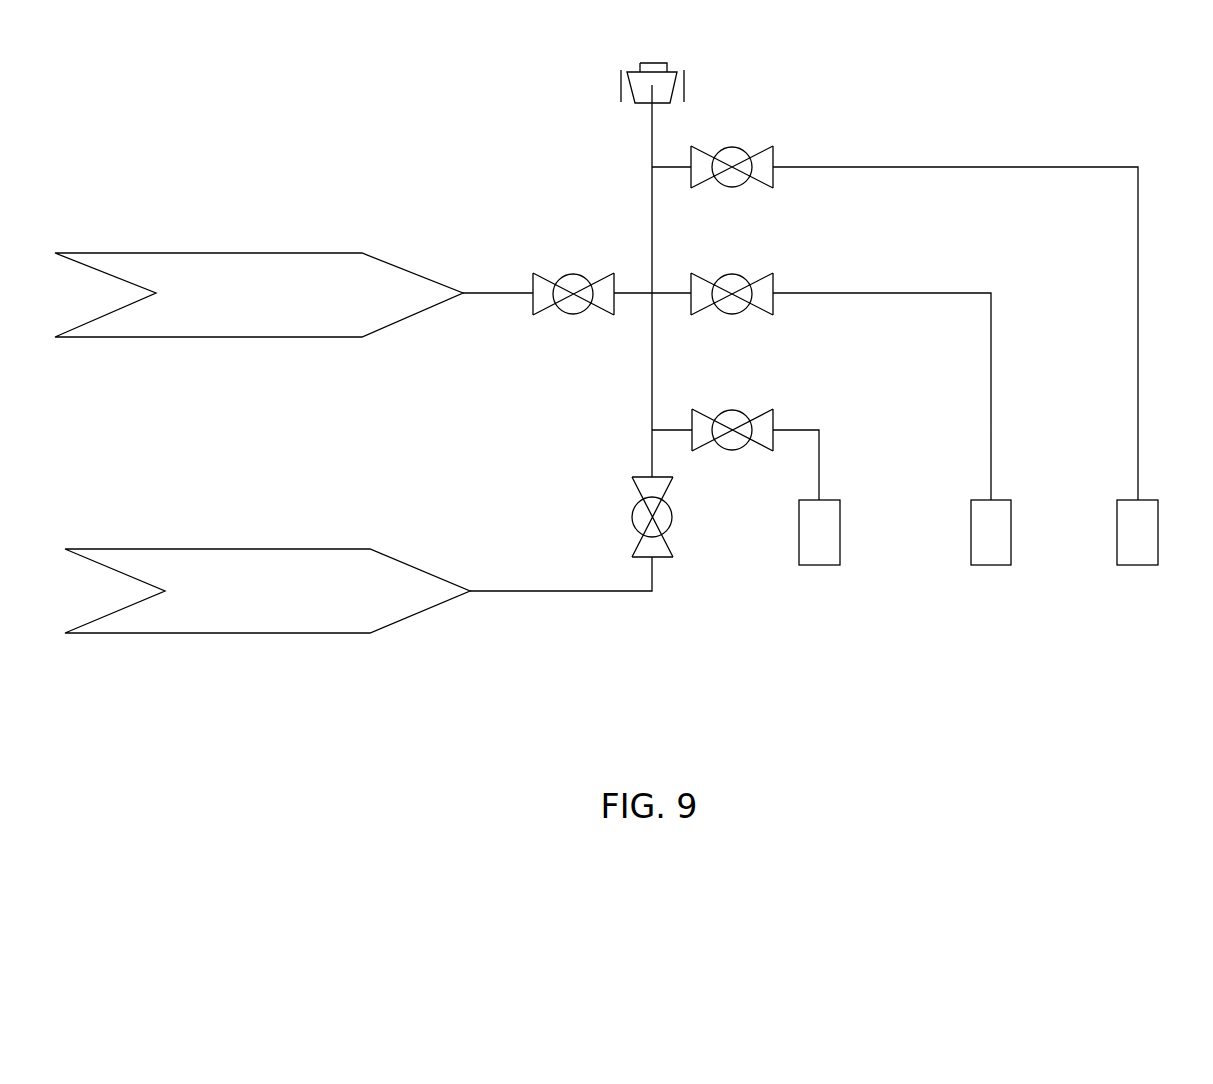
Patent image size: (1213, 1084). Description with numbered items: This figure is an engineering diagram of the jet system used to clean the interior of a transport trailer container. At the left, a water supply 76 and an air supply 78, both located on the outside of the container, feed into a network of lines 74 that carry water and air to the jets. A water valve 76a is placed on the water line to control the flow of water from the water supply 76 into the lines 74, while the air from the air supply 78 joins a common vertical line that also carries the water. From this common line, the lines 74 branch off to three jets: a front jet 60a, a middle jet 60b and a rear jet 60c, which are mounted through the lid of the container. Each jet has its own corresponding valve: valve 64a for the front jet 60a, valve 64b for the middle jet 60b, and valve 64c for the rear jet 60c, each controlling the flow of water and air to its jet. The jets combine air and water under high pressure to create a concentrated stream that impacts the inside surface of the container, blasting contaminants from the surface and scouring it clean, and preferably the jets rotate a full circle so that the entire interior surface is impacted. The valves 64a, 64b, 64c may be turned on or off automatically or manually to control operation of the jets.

The water supply 76 is at (270, 253).
The air supply 78 is at (277, 549).
The water valve 76a is at (533, 273).
The valve 64a is at (720, 438).
The valve 64b is at (773, 312).
The valve 64c is at (773, 166).
The lines 74 is at (991, 297).
The front jet 60a is at (819, 565).
The middle jet 60b is at (991, 565).
The rear jet 60c is at (1138, 565).